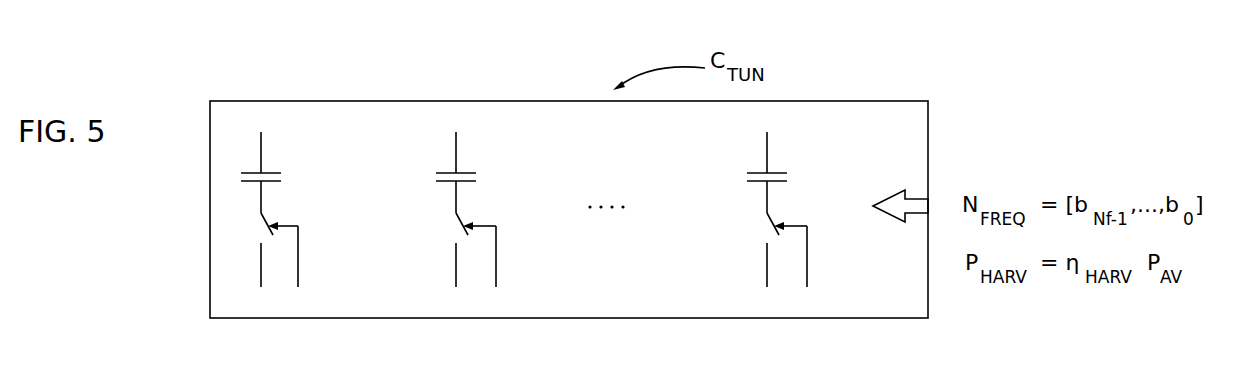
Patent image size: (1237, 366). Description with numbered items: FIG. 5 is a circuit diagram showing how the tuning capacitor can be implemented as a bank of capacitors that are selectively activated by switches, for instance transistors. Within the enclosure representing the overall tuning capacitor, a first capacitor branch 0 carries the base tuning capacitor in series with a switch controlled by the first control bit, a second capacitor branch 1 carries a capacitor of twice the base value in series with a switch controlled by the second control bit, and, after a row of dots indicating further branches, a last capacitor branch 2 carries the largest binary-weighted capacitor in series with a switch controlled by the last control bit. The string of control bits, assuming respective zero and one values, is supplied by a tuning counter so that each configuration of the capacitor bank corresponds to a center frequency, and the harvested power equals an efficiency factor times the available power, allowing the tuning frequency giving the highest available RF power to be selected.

The tuning capacitor branch controlled by bit b0 0 is at (289, 215).
The tuning capacitor branch controlled by bit b1 1 is at (497, 215).
The tuning capacitor branch 2^(Nf-1) C_TUN-0 controlled by bit b_Nf-1 2 is at (824, 213).